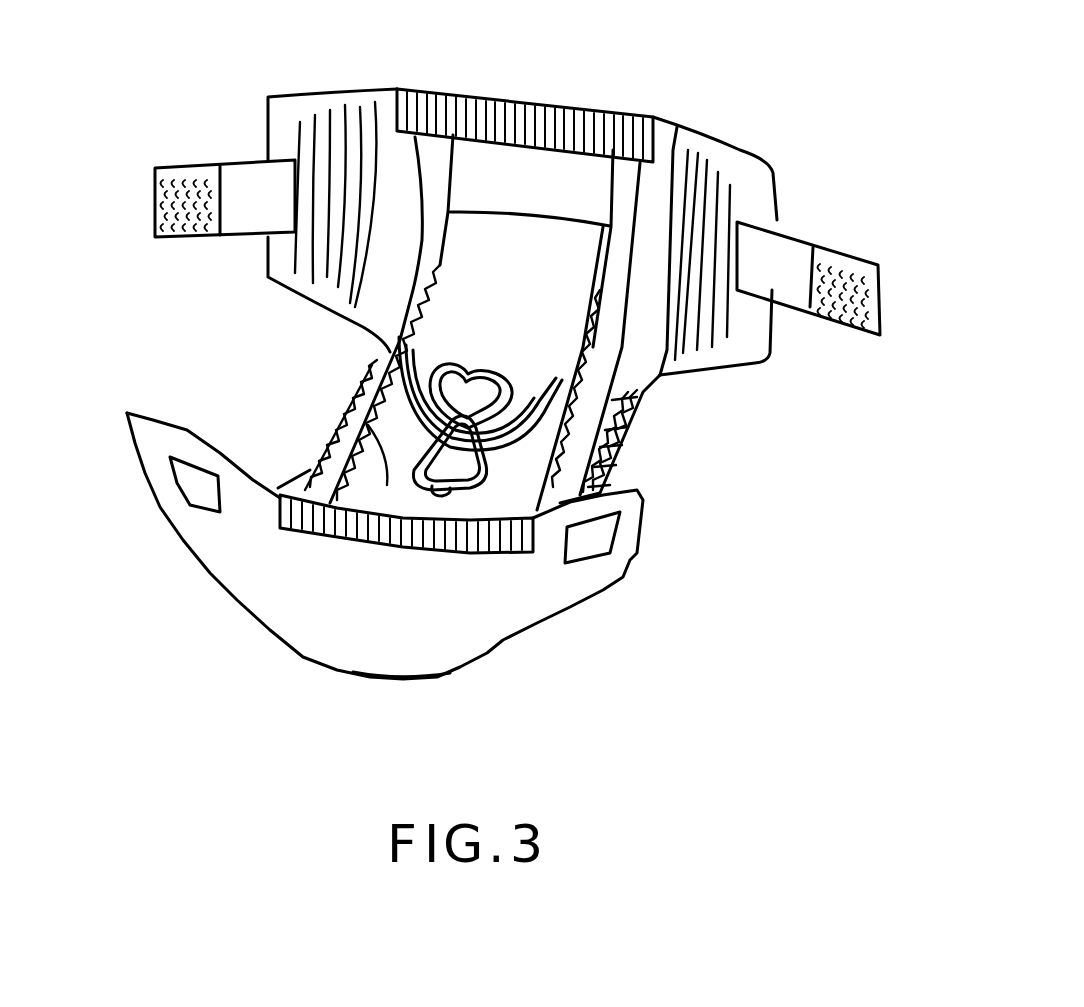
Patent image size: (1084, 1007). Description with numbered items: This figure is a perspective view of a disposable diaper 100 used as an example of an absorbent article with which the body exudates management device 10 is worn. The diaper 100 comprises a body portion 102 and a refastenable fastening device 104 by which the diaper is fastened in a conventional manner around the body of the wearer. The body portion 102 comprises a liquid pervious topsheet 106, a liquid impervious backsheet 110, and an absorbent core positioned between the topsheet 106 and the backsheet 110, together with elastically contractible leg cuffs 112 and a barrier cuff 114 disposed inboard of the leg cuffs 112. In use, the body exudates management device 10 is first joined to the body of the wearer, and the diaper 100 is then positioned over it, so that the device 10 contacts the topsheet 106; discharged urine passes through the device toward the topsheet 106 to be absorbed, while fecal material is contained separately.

The disposable diaper 100 is at (683, 117).
The refastenable fastening device 104 is at (175, 150).
The body exudates management device 10 is at (503, 195).
The liquid pervious topsheet 106 is at (350, 415).
The barrier cuff 114 is at (590, 403).
The elastically contractible leg cuffs 112 is at (593, 435).
The body portion 102 is at (503, 657).
The liquid impervious backsheet 110 is at (333, 628).